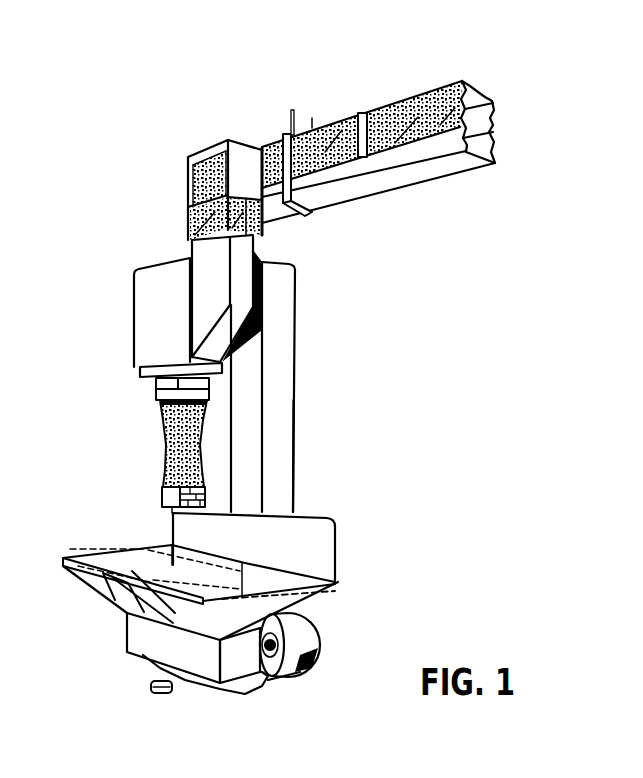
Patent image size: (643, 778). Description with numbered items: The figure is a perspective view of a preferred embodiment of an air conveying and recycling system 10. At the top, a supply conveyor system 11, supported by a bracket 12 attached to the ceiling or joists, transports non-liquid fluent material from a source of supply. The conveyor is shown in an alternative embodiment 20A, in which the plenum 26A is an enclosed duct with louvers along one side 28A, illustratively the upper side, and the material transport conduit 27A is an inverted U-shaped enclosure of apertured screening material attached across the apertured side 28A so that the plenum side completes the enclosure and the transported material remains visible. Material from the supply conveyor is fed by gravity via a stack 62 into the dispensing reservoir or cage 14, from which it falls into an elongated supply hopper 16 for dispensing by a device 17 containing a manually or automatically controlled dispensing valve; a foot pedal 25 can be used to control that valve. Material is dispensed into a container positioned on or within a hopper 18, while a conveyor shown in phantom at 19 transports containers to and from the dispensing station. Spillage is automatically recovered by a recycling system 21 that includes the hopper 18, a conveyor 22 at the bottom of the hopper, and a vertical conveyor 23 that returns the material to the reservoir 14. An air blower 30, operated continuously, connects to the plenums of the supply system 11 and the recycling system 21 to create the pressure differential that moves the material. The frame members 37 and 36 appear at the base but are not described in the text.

The air conveying and recycling system 10 is at (152, 144).
The supply conveyor system 11 is at (373, 107).
The bracket 12 is at (288, 131).
The dispensing reservoir or cage 14 is at (138, 311).
The supply hopper 16 is at (162, 437).
The dispensing device 17 is at (162, 498).
The hopper 18 is at (342, 560).
The conveyor 19 is at (350, 595).
The alternative embodiment 20A is at (552, 46).
The recycling system 21 is at (303, 340).
The conveyor 22 is at (138, 660).
The vertical conveyor 23 is at (297, 453).
The foot pedal 25 is at (151, 689).
The plenum 26A is at (479, 168).
The material transport conduit 27A is at (466, 82).
The louvered side of plenum 28A is at (470, 133).
The air blower 30 is at (321, 640).
The gusset 36 is at (130, 618).
The frame 37 is at (113, 580).
The stack 62 is at (247, 253).